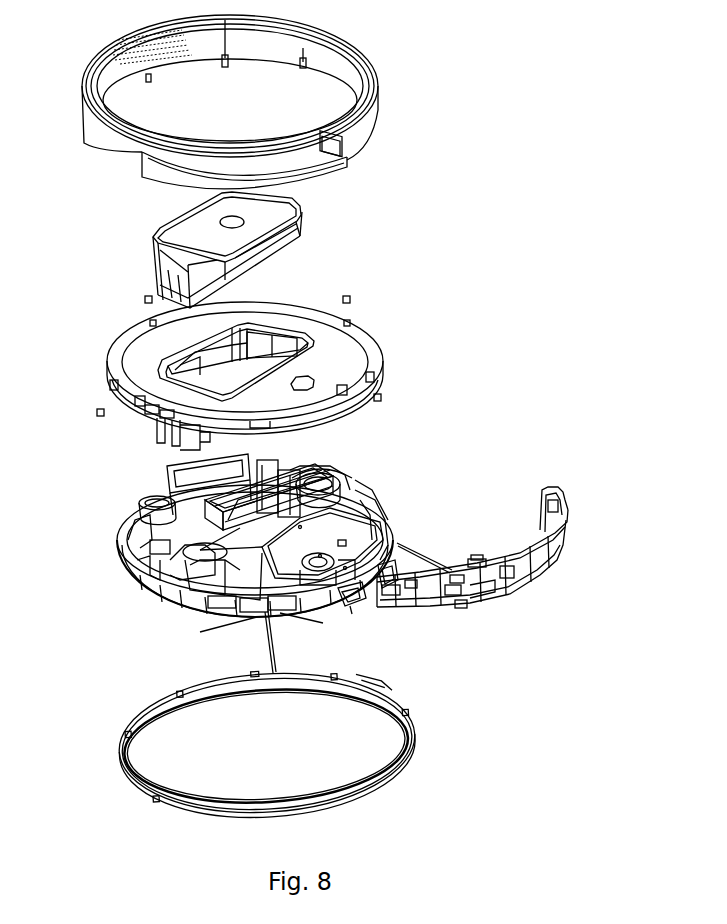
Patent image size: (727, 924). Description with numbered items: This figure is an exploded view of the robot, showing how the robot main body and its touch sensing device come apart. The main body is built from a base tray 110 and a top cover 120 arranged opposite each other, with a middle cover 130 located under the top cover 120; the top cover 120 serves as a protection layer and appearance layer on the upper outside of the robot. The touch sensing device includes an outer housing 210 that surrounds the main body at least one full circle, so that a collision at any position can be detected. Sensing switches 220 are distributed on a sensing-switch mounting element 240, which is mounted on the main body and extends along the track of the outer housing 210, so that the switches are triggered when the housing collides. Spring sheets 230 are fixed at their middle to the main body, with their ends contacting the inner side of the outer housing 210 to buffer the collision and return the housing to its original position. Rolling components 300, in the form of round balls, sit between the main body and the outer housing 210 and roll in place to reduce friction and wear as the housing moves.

The base tray 110 is at (125, 570).
The top cover 120 is at (145, 377).
The middle cover 130 is at (373, 350).
The outer housing 210 is at (368, 127).
The sensing switches 220 is at (472, 590).
The spring sheets 230 is at (399, 626).
The sensing-switch mounting element 240 is at (477, 597).
The rolling components 300 is at (147, 300).